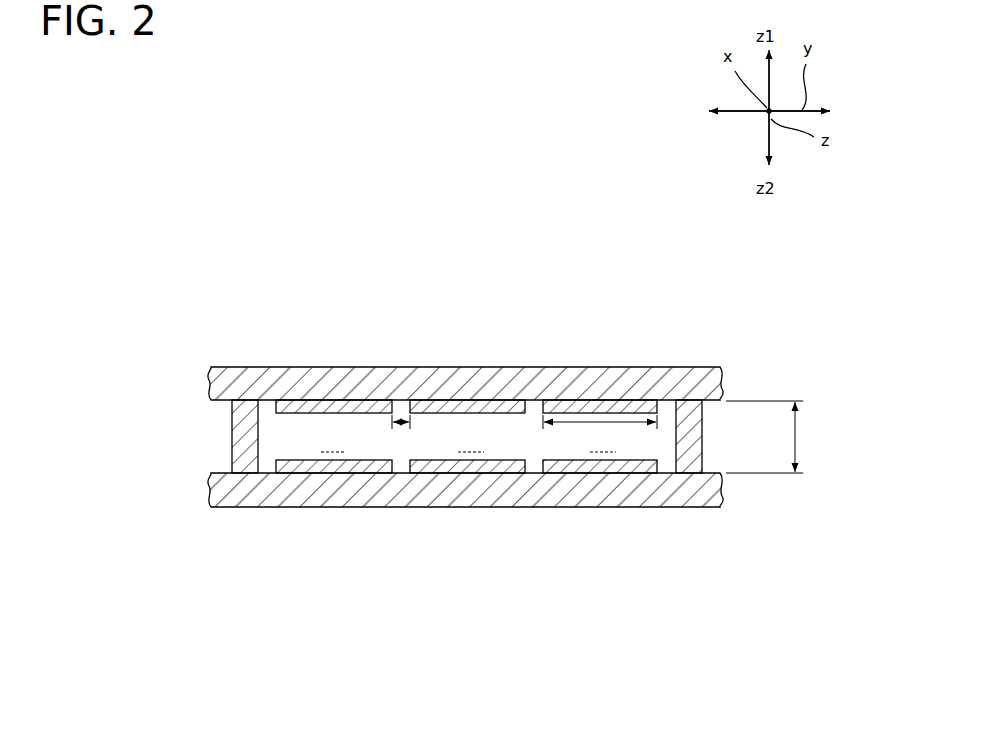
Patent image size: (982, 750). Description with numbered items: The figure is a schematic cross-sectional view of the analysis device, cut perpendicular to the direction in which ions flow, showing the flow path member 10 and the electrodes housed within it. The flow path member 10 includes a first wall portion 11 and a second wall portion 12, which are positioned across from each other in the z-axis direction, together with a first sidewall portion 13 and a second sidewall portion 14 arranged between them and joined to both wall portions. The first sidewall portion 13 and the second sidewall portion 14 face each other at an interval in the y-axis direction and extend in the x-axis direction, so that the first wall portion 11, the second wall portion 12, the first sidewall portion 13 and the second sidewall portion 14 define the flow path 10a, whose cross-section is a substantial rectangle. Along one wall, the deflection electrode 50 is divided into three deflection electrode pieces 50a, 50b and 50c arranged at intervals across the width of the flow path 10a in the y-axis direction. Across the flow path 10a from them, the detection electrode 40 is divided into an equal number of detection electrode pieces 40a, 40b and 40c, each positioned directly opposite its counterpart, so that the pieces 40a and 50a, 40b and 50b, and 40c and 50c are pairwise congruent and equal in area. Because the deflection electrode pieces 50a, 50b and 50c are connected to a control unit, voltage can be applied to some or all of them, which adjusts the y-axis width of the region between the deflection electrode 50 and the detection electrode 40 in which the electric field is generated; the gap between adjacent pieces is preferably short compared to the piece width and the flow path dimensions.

The flow path member 10 is at (666, 336).
The flow path 10a is at (675, 440).
The first wall portion 11 is at (225, 364).
The second wall portion 12 is at (216, 510).
The first sidewall portion 13 is at (231, 437).
The second sidewall portion 14 is at (703, 440).
The detection electrode 40 is at (587, 578).
The detection electrode piece 40a is at (366, 507).
The detection electrode piece 40b is at (463, 507).
The detection electrode piece 40c is at (557, 507).
The deflection electrode 50 is at (587, 293).
The deflection electrode piece 50a is at (368, 400).
The deflection electrode piece 50b is at (468, 400).
The deflection electrode piece 50c is at (558, 400).